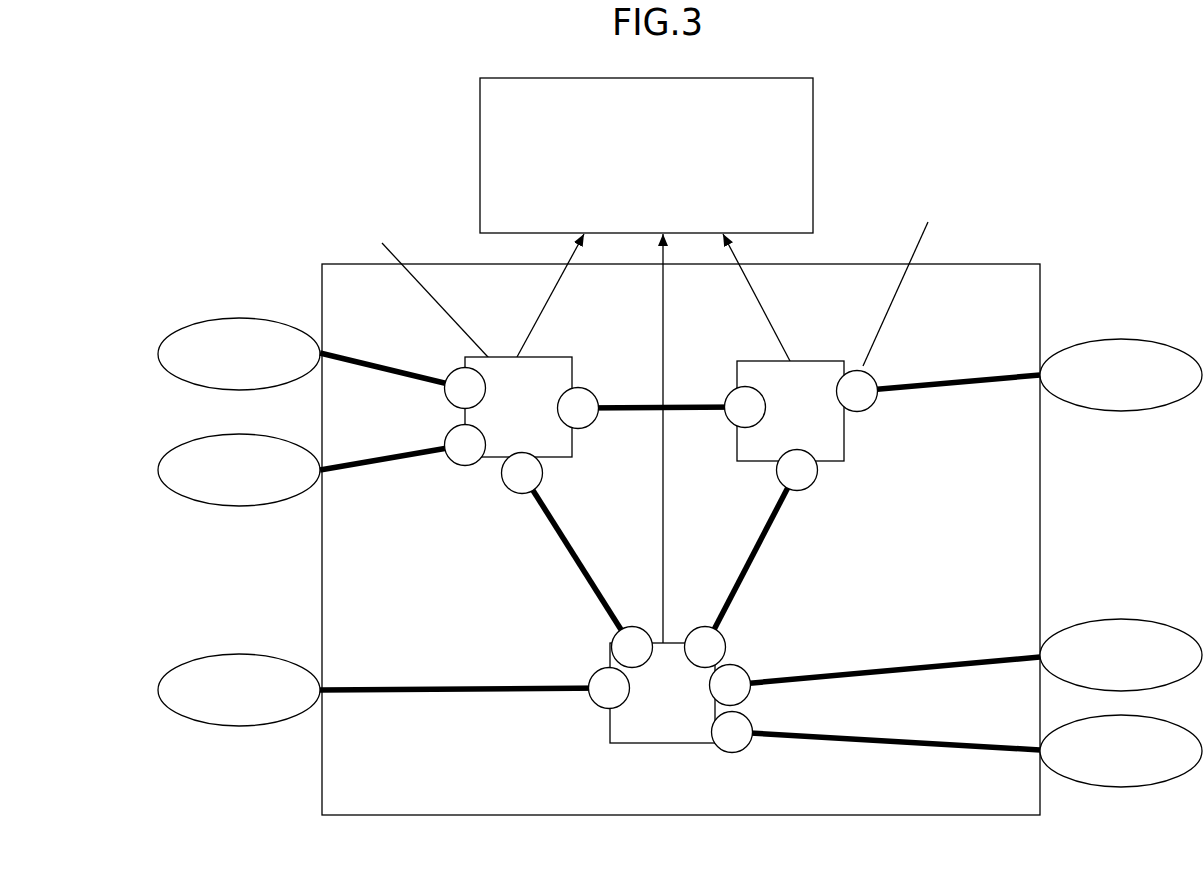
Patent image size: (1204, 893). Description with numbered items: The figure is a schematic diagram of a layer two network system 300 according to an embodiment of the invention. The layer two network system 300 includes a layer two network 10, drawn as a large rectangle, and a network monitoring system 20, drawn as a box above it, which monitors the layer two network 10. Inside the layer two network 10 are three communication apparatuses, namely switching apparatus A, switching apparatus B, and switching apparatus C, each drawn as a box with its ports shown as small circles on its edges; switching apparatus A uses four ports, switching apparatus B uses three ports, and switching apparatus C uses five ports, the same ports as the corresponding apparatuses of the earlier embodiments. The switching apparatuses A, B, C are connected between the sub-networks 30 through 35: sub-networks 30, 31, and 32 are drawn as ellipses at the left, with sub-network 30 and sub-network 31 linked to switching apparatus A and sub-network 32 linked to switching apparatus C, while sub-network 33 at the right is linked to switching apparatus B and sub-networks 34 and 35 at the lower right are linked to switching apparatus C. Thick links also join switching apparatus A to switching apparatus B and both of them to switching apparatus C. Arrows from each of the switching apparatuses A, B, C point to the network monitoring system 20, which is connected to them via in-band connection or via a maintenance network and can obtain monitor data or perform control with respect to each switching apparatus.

The layer 2 network system 300 is at (330, 76).
The network monitoring system 20 is at (813, 133).
The layer 2 network 10 is at (1040, 501).
The sub-network 30 is at (207, 319).
The sub-network 31 is at (190, 442).
The sub-network 32 is at (207, 655).
The sub-network 33 is at (1110, 338).
The sub-network 34 is at (1123, 618).
The sub-network 35 is at (1117, 788).
The switching apparatus A is at (540, 357).
The switching apparatus B is at (805, 360).
The switching apparatus C is at (618, 743).